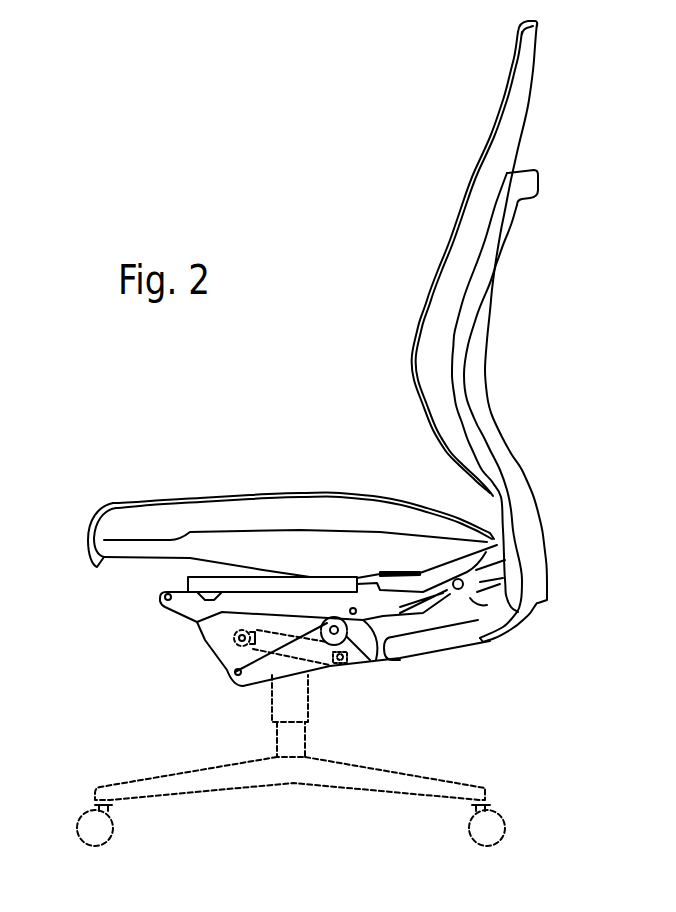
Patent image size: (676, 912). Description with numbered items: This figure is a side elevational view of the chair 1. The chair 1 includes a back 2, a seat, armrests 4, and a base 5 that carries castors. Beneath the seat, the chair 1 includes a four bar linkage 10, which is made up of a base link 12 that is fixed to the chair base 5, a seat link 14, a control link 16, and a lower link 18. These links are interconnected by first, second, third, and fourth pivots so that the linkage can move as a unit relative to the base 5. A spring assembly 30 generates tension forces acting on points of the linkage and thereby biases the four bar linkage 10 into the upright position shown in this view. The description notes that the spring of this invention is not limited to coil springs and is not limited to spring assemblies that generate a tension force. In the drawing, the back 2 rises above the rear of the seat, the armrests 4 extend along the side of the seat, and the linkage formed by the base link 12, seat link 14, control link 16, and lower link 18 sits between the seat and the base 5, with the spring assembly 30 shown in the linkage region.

The chair 1 is at (525, 312).
The back 2 is at (510, 245).
The armrests 4 is at (163, 500).
The base 5 is at (275, 738).
The four bar linkage 10 is at (178, 617).
The base link 12 is at (202, 627).
The seat link 14 is at (260, 600).
The control link 16 is at (357, 620).
The lower link 18 is at (313, 673).
The spring assembly 30 is at (297, 650).